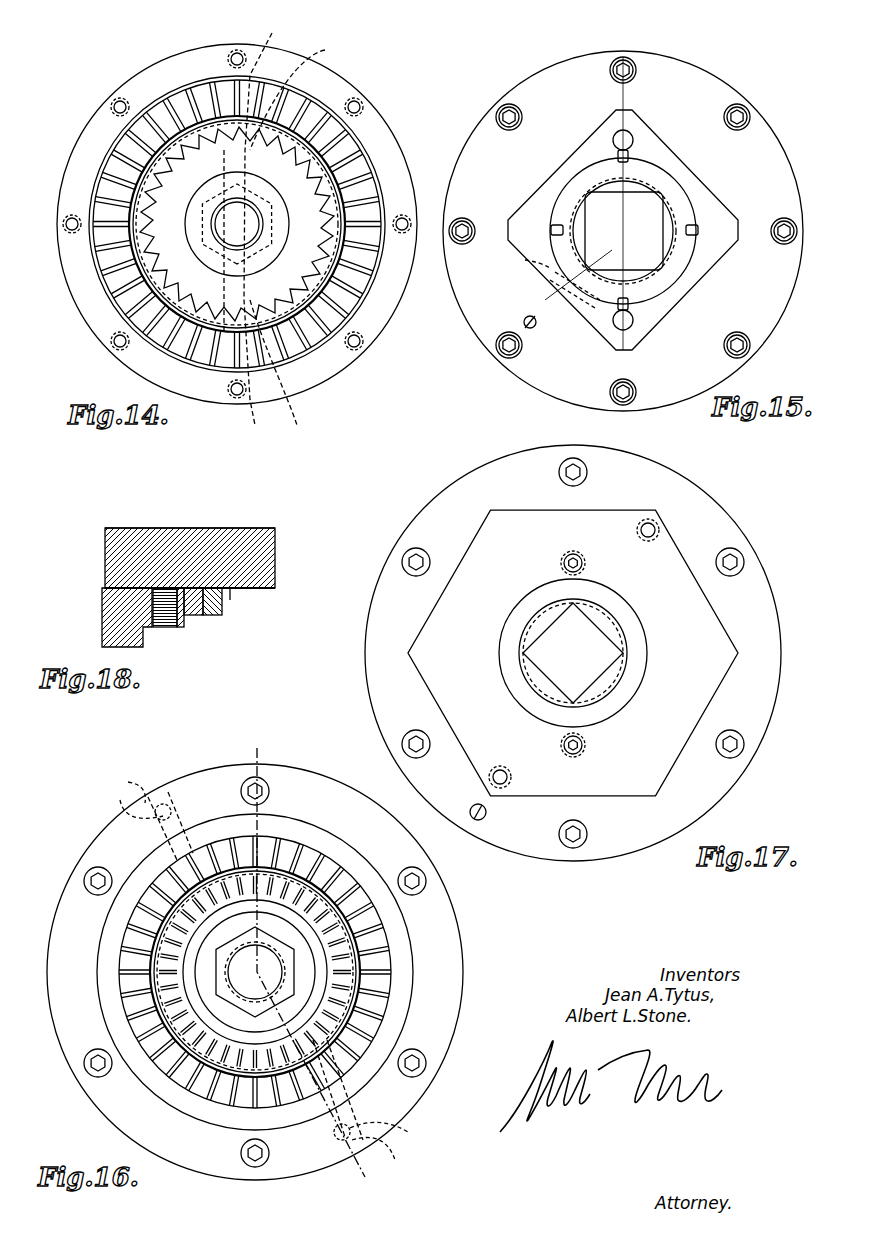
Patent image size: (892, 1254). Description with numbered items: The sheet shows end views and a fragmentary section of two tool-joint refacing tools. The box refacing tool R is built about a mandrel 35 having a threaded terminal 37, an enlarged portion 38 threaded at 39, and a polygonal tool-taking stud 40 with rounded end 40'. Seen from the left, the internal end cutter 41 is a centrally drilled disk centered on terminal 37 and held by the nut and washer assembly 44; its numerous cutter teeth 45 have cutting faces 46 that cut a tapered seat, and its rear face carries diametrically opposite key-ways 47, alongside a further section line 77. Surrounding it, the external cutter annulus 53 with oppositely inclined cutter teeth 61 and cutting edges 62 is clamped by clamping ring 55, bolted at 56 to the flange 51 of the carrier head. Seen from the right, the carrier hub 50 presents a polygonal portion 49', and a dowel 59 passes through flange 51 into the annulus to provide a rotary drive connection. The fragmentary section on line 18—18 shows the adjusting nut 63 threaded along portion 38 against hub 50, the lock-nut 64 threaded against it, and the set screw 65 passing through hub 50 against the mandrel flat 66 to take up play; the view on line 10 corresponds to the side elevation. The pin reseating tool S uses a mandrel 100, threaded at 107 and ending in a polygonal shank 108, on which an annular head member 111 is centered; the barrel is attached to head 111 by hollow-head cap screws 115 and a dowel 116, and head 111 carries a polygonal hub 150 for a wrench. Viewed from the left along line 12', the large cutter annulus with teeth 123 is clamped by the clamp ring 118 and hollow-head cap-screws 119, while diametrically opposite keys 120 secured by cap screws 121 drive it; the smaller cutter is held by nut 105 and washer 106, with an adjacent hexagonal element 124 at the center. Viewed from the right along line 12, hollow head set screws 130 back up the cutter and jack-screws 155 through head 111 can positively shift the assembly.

In FIG. 14, the end cutter 41 is at (145, 152).
In FIG. 14, the cutter teeth 45 is at (203, 132).
In FIG. 14, the section line 77 is at (258, 230).
In FIG. 14, the key-ways 47 is at (298, 236).
In FIG. 14, the threaded terminal 37 is at (243, 213).
In FIG. 14, the nut and washer assembly 44 is at (278, 217).
In FIG. 14, the cutter annulus 53 is at (362, 262).
In FIG. 14, the cutter teeth 61 is at (352, 287).
In FIG. 14, the cutting faces 46 is at (332, 318).
In FIG. 14, the clamping ring 55 is at (363, 333).
In FIG. 14, the bolts 56 is at (110, 338).
In FIG. 15, the bolts 56 is at (748, 348).
In FIG. 14, the cutting edges 62 is at (310, 330).
In FIG. 14, the box refacing tool R is at (390, 116).
In FIG. 15, the flange 51 is at (552, 78).
In FIG. 15, the hub 50 is at (583, 148).
In FIG. 18, the hub 50 is at (181, 623).
In FIG. 15, the polygonal hub portion 49' is at (611, 230).
In FIG. 15, the rounded end 40' is at (647, 203).
In FIG. 15, the threaded portion 39 is at (676, 212).
In FIG. 18, the threaded portion 39 is at (231, 596).
In FIG. 15, the polygonal tool-taking stud 40 is at (656, 231).
In FIG. 18, the polygonal tool-taking stud 40 is at (202, 597).
In FIG. 15, the lock-nut 64 is at (672, 278).
In FIG. 18, the lock-nut 64 is at (222, 612).
In FIG. 15, the set screw 65 is at (549, 280).
In FIG. 18, the set screw 65 is at (165, 628).
In FIG. 15, the section line 18 is at (614, 252).
In FIG. 15, the dowel 59 is at (524, 316).
In FIG. 15, the section line 10 is at (623, 57).
In FIG. 17, the annular head member 111 is at (718, 678).
In FIG. 17, the hollow-head cap screws 115 is at (420, 563).
In FIG. 17, the polygonal hub 150 is at (680, 555).
In FIG. 17, the mandrel 100 is at (628, 626).
In FIG. 16, the mandrel 100 is at (272, 961).
In FIG. 17, the threaded portion 107 is at (628, 642).
In FIG. 17, the polygonal shank 108 is at (605, 678).
In FIG. 17, the hollow head set screws 130 is at (585, 563).
In FIG. 17, the jack-screws 155 is at (645, 540).
In FIG. 17, the dowel 116 is at (486, 814).
In FIG. 17, the section line 12 is at (539, 653).
In FIG. 16, the clamp ring 118 is at (125, 825).
In FIG. 16, the hollow-head cap-screws 119 is at (86, 873).
In FIG. 16, the teeth 123 is at (188, 1037).
In FIG. 16, the nut 105 is at (245, 1030).
In FIG. 16, the washer 106 is at (243, 1025).
In FIG. 16, the hexagonal nut 124 is at (255, 1015).
In FIG. 16, the keys 120 is at (260, 970).
In FIG. 16, the cap screws 121 is at (259, 965).
In FIG. 16, the section line 12' is at (256, 970).
In FIG. 16, the pin reseating tool S is at (383, 751).
In FIG. 18, the mandrel 35 is at (279, 545).
In FIG. 18, the enlarged portion 38 is at (168, 547).
In FIG. 18, the mandrel flat 66 is at (140, 590).
In FIG. 18, the adjusting nut 63 is at (196, 614).